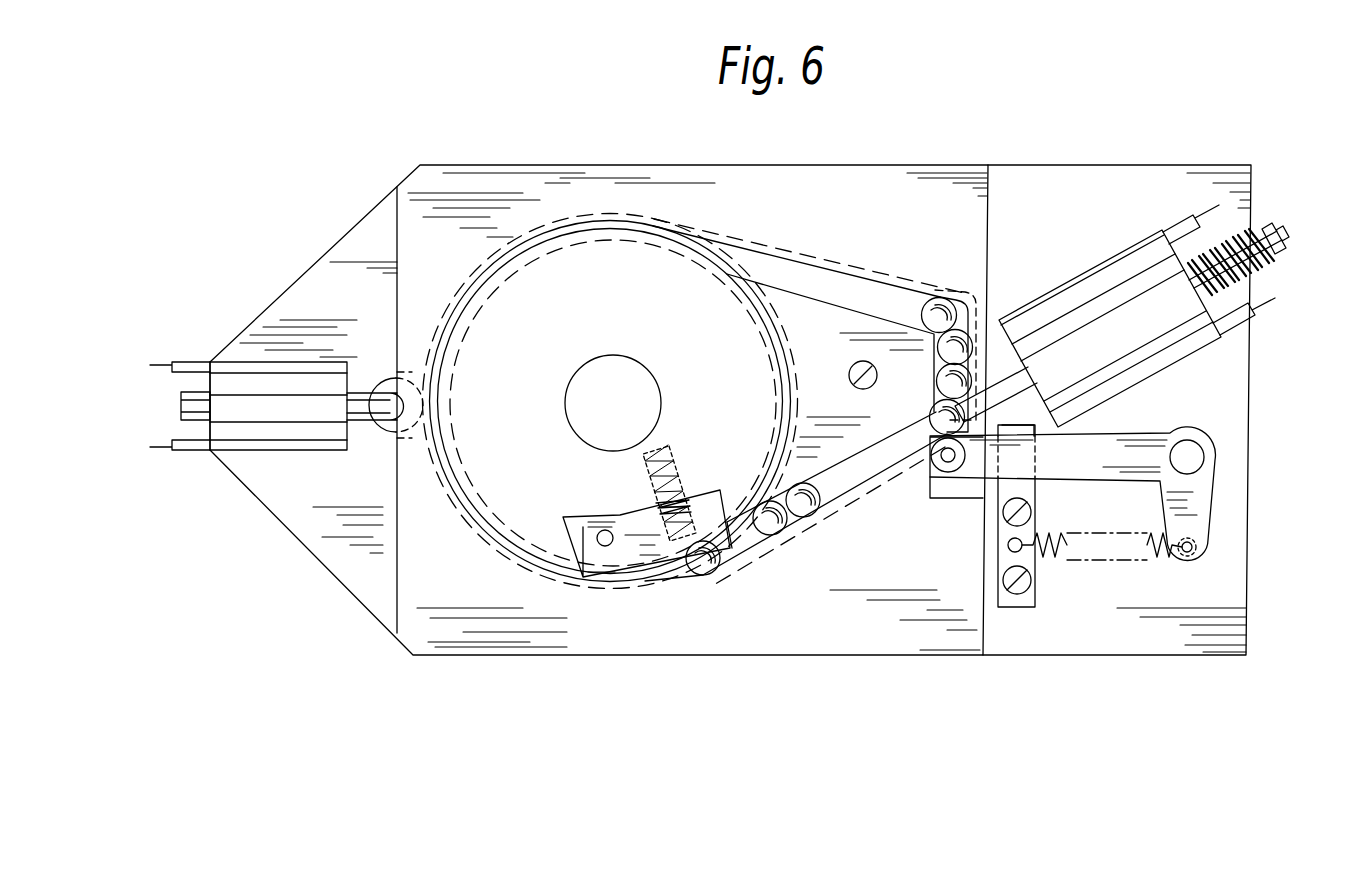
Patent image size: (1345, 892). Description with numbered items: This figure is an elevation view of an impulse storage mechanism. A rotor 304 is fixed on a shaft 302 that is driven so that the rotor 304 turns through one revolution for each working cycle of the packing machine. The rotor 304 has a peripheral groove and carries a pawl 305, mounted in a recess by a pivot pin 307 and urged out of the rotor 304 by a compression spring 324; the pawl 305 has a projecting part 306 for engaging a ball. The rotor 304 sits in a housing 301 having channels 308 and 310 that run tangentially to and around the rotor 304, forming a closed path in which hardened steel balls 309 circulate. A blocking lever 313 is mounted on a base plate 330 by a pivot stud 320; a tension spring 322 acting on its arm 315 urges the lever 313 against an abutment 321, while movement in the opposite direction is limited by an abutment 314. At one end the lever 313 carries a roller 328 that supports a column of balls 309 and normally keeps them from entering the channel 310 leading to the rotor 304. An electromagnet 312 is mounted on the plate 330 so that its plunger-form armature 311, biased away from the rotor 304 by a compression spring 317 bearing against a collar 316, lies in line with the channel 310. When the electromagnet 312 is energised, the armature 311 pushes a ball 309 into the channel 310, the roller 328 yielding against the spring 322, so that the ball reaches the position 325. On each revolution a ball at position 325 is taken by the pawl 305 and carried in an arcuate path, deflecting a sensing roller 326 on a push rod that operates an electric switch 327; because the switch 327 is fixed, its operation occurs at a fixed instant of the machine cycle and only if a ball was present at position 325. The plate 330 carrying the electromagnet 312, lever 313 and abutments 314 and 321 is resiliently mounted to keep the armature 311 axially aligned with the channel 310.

The housing 301 is at (668, 183).
The shaft 302 is at (625, 388).
The rotor 304 is at (583, 277).
The pawl 305 is at (637, 552).
The projecting part 306 is at (725, 530).
The pivot pin 307 is at (605, 547).
The channel 308 is at (763, 275).
The balls 309 is at (935, 313).
The channel 310 is at (880, 455).
The armature 311 is at (1033, 380).
The electromagnet 312 is at (1105, 280).
The blocking lever 313 is at (1100, 460).
The abutment 314 is at (1005, 600).
The arm 315 is at (1190, 522).
The collar 316 is at (1258, 222).
The compression spring 317 is at (1267, 273).
The pivot stud 320 is at (1204, 460).
The abutment 321 is at (1035, 428).
The tension spring 322 is at (1166, 552).
The compression spring 324 is at (658, 512).
The position 325 is at (708, 562).
The sensing roller 326 is at (387, 425).
The electric switch 327 is at (230, 427).
The roller 328 is at (943, 470).
The base plate 330 is at (1057, 205).